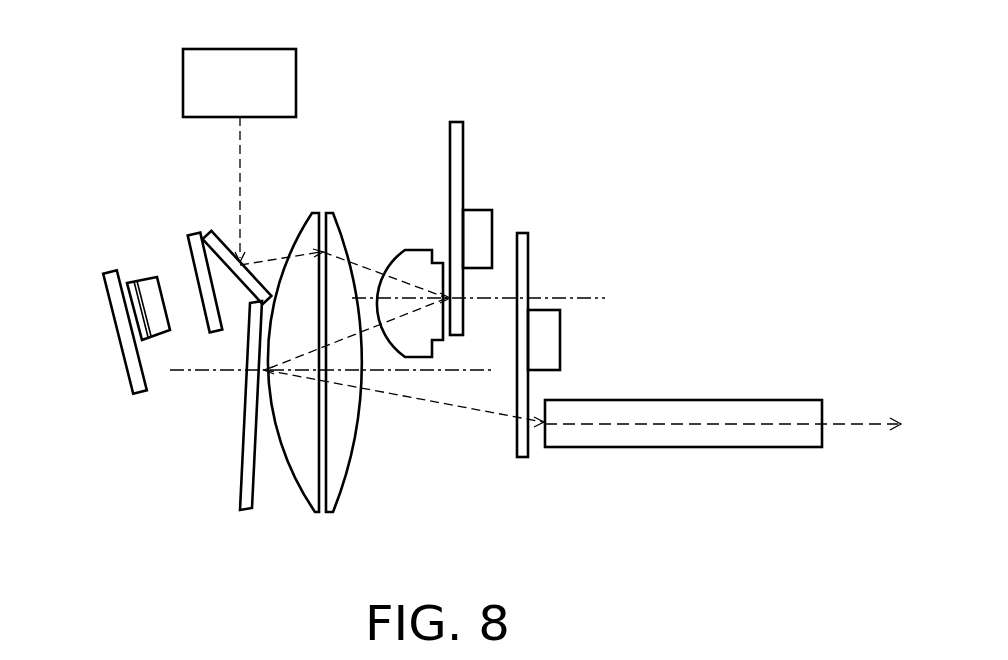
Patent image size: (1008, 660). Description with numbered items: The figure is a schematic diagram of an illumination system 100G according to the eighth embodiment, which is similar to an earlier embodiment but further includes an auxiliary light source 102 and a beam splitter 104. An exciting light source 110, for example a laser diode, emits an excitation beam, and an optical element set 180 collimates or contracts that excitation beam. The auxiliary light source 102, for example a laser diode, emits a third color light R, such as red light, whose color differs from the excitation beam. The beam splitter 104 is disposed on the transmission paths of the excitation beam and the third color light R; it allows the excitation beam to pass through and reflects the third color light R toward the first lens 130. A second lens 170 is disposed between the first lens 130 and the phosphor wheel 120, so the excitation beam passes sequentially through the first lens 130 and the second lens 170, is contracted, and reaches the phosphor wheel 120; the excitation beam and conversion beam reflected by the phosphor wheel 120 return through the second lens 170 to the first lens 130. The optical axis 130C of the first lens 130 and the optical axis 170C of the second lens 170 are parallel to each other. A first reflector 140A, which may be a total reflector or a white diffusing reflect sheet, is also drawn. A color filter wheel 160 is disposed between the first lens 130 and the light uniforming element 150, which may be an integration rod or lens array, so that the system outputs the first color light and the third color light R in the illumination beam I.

The illumination system 100G is at (94, 77).
The auxiliary light source 102 is at (296, 83).
The third color light R is at (238, 148).
The beam splitter 104 is at (232, 232).
The optical element set 180 is at (192, 268).
The exciting light source 110 is at (105, 294).
The first reflector 140A is at (245, 494).
The first lens 130 is at (318, 514).
The optical axis of the first lens 130C is at (420, 373).
The second lens 170 is at (410, 252).
The optical axis of the second lens 170C is at (601, 297).
The phosphor wheel 120 is at (463, 158).
The color filter wheel 160 is at (522, 460).
The light uniforming element 150 is at (686, 403).
The illumination beam I is at (858, 420).